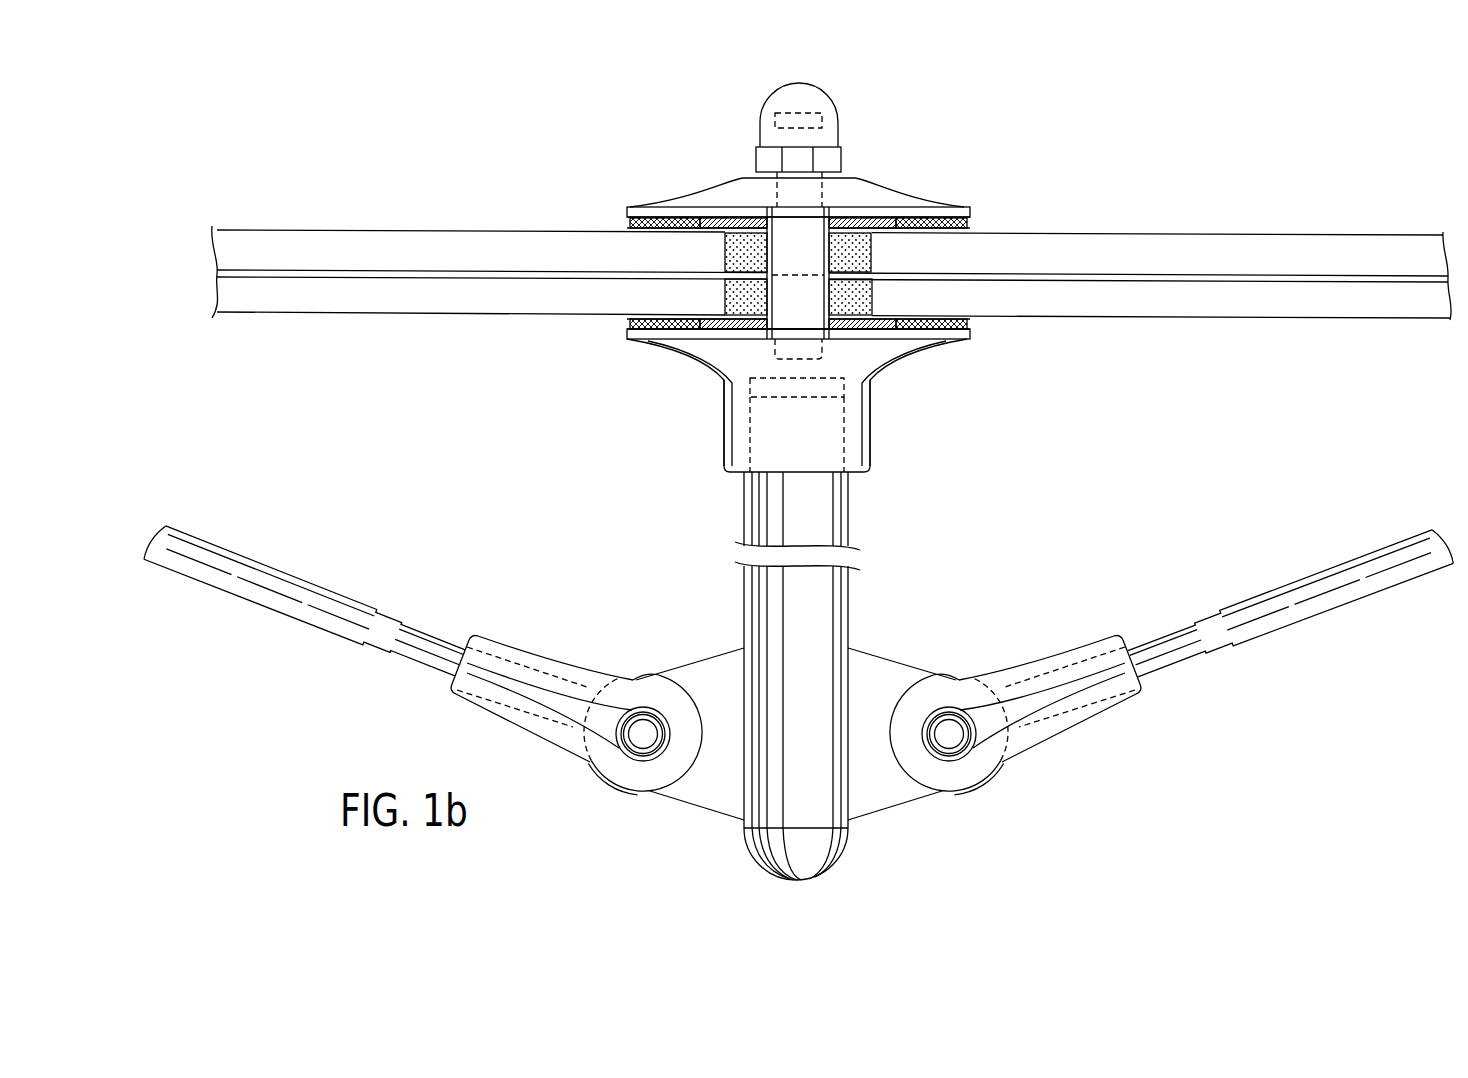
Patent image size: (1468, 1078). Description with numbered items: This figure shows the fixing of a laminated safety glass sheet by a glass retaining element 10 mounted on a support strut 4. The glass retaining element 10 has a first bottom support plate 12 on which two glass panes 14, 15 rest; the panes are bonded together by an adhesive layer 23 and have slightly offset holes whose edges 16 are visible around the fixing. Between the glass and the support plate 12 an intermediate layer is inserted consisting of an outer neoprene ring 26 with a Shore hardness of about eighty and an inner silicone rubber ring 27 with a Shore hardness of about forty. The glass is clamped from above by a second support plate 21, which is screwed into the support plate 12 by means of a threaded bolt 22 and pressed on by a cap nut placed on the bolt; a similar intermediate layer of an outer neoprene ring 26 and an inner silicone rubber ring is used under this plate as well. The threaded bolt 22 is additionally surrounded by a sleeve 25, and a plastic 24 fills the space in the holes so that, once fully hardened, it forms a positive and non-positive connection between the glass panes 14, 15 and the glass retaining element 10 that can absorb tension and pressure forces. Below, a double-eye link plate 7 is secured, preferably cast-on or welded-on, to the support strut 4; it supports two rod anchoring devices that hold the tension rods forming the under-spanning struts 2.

The under-spanning strut 2 is at (305, 586).
The support strut 4 is at (833, 583).
The double-eye link plate 7 is at (695, 683).
The glass retaining element 10 is at (716, 435).
The first bottom support plate 12 is at (960, 342).
The glass pane 14 is at (292, 248).
The glass pane 15 is at (360, 297).
The edges of the holes 16 is at (875, 302).
The second support plate 21 is at (645, 204).
The threaded bolt 22 is at (795, 260).
The adhesive layer 23 is at (393, 273).
The plastic 24 is at (857, 263).
The sleeve 25 is at (833, 330).
The outer neoprene ring 26 is at (640, 214).
The inner silicone rubber ring 27 is at (732, 222).